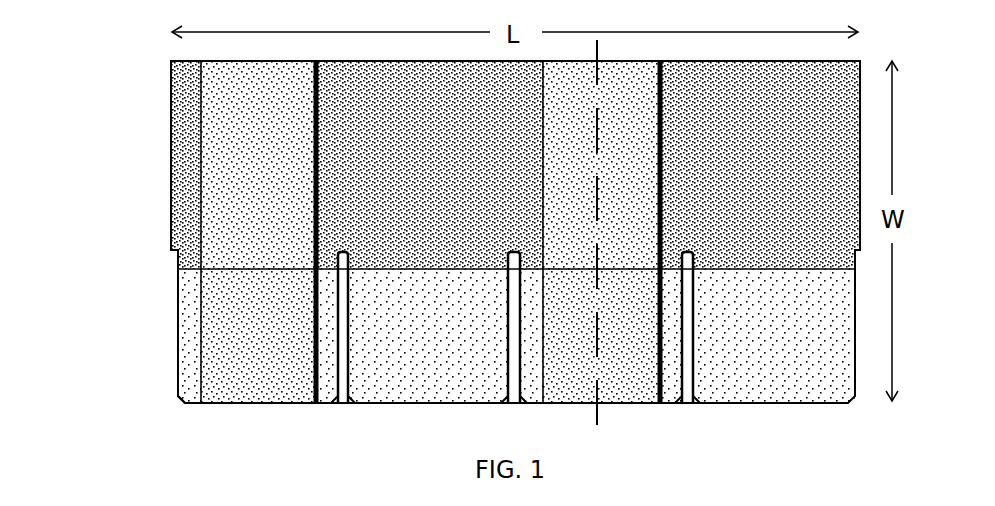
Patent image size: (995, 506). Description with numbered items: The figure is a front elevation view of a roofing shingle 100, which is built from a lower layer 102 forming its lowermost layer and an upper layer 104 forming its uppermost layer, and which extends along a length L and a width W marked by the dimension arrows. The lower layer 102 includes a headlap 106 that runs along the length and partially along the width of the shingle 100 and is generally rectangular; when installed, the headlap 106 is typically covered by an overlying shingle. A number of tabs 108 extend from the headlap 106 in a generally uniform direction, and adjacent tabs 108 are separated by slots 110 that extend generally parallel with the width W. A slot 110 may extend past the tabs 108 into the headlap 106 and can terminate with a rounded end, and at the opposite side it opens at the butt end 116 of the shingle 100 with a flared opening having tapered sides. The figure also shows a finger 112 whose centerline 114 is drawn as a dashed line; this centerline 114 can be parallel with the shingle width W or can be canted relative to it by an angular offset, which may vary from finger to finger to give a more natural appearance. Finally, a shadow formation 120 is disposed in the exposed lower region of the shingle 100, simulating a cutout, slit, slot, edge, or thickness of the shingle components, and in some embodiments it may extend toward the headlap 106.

The roofing shingle 100 is at (137, 78).
The lower layer 102 is at (171, 210).
The upper layer 104 is at (278, 242).
The headlap 106 is at (785, 168).
The tab 108 is at (790, 348).
The slot 110 is at (345, 400).
The finger 112 is at (250, 380).
The centerline 114 is at (597, 418).
The butt end 116 is at (735, 405).
The shadow formation 120 is at (448, 405).